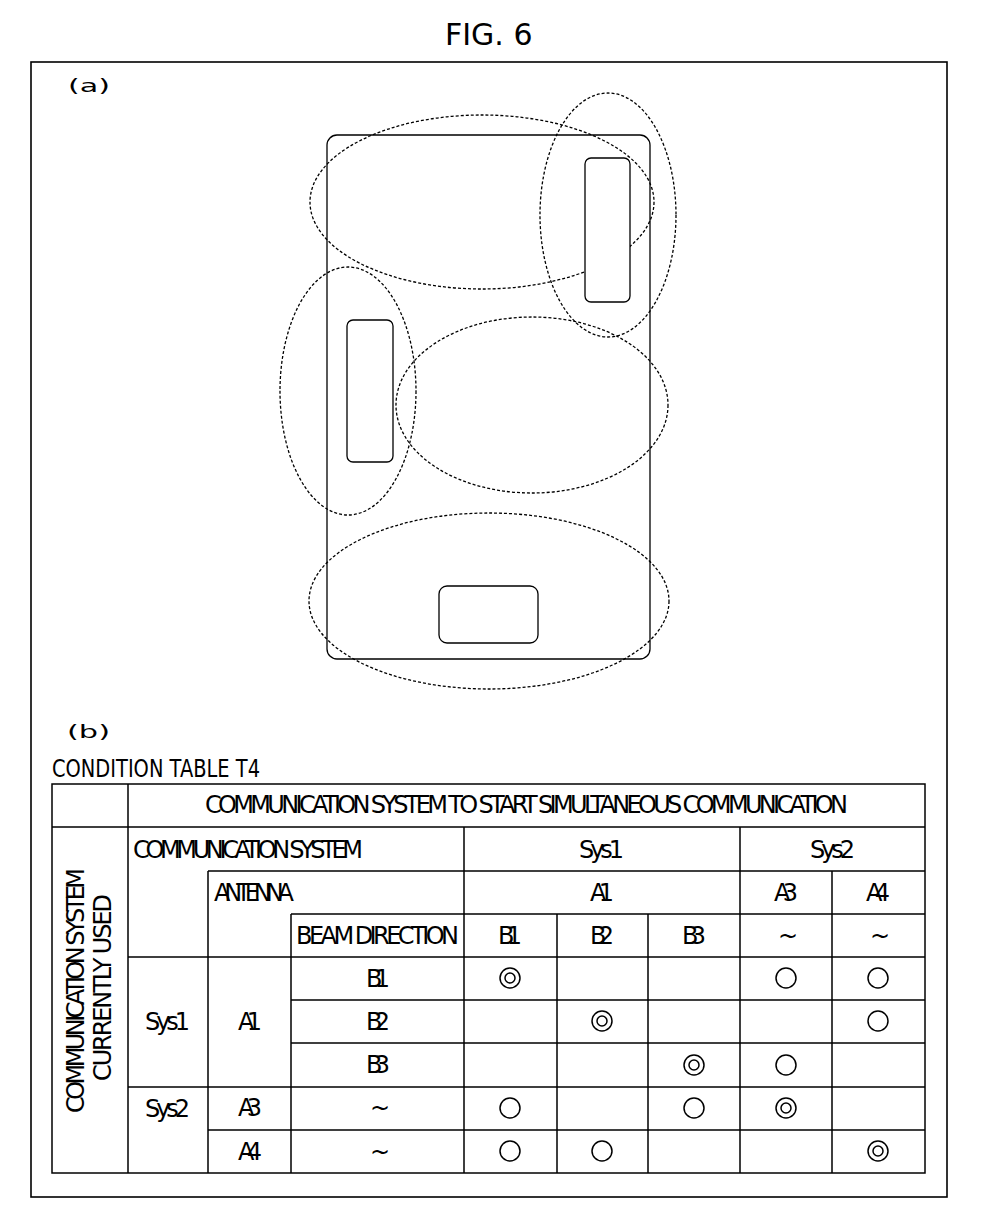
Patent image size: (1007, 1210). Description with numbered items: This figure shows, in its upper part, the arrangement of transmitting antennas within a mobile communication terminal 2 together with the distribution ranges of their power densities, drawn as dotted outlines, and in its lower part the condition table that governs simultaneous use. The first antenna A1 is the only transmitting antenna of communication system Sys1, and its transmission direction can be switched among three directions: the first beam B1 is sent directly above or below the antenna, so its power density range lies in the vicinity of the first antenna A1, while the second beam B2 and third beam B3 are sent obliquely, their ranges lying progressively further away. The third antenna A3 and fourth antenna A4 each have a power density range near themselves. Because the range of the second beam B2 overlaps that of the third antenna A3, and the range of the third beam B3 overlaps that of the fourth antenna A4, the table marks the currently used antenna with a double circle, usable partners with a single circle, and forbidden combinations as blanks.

The mobile communication terminal 2 is at (358, 138).
The first antenna A1 is at (488, 614).
The third antenna A3 is at (348, 391).
The fourth antenna A4 is at (608, 215).
The first beam B1 is at (667, 600).
The second beam B2 is at (667, 403).
The third beam B3 is at (310, 208).